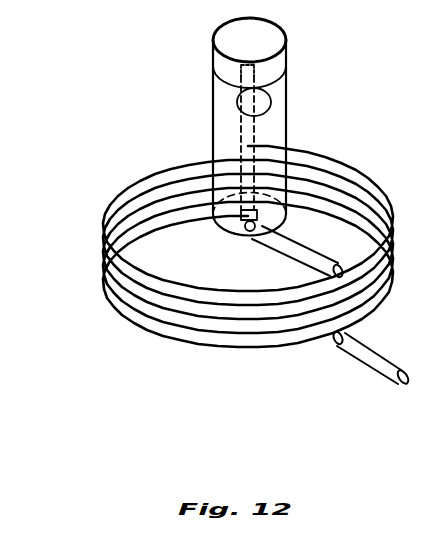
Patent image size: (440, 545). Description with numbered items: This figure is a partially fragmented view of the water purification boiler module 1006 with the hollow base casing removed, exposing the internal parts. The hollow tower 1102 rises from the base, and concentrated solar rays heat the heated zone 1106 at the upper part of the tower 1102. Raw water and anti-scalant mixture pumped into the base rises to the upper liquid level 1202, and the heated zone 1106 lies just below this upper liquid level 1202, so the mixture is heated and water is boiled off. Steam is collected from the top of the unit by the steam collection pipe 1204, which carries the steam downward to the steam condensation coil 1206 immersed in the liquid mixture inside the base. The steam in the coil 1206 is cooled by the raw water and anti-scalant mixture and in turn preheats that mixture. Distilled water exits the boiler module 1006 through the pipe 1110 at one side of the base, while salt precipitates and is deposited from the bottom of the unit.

The water purification boiler module 1006 is at (100, 165).
The hollow tower 1102 is at (288, 100).
The heated zone 1106 is at (237, 113).
The pipe 1110 is at (386, 377).
The upper liquid level 1202 is at (213, 80).
The steam collection pipe 1204 is at (247, 71).
The steam condensation coil 1206 is at (106, 297).